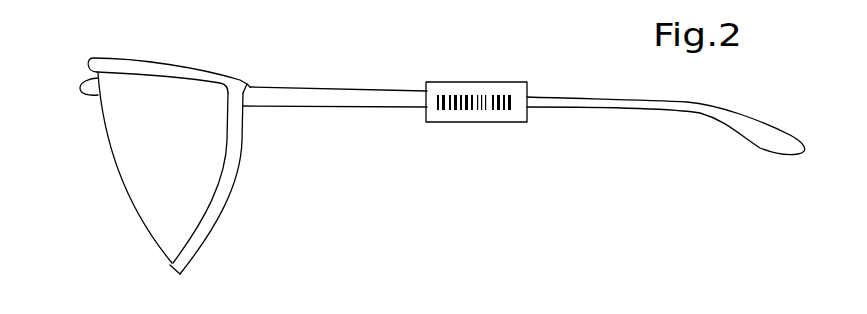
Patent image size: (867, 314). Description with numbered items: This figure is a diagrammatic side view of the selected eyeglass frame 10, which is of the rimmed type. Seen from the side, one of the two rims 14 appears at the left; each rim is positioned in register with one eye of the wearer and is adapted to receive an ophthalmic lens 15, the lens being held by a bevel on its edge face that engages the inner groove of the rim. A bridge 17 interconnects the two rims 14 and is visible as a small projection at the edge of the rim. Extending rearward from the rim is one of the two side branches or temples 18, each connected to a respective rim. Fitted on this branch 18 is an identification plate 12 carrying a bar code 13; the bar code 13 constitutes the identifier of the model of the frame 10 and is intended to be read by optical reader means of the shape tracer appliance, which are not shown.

The eyeglass frame 10 is at (254, 88).
The identification plate 12 is at (528, 87).
The bar code 13 is at (513, 103).
The rim 14 is at (213, 210).
The ophthalmic lens 15 is at (150, 218).
The bridge 17 is at (85, 98).
The temple 18 is at (372, 97).